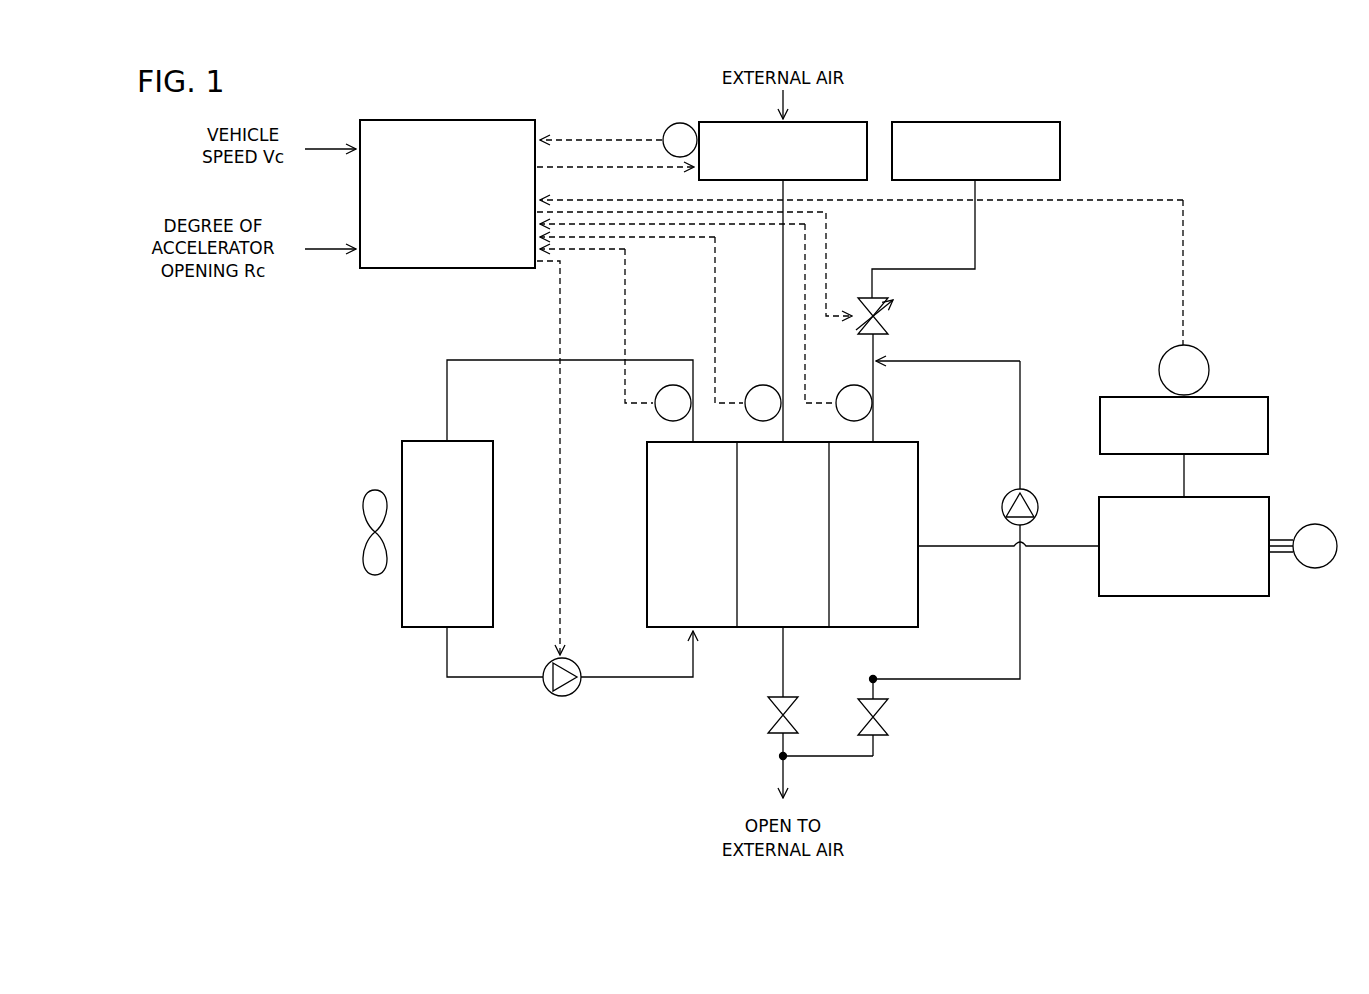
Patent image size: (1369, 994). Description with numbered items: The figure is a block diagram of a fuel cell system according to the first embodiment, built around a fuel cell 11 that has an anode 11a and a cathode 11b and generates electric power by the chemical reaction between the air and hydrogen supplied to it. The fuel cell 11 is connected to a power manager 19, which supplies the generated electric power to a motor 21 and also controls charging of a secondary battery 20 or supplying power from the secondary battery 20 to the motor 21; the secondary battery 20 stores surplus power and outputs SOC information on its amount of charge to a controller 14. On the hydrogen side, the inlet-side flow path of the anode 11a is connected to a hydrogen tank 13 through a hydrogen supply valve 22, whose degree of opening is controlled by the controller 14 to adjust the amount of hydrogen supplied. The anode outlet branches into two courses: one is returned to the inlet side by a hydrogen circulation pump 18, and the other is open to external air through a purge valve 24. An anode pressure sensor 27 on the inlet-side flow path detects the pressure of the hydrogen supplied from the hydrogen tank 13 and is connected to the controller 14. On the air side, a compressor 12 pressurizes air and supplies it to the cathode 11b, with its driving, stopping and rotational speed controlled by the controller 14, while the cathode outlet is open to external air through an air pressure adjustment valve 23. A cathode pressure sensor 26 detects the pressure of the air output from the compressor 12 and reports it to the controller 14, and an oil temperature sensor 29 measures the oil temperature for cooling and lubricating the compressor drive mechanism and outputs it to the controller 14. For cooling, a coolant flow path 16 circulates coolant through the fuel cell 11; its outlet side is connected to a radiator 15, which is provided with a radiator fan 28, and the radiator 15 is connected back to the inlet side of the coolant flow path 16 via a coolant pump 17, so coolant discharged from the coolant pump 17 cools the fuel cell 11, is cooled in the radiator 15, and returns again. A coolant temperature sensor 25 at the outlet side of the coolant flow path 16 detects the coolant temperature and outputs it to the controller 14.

The fuel cell 11 is at (801, 525).
The anode 11a is at (914, 516).
The cathode 11b is at (818, 449).
The compressor 12 is at (805, 122).
The hydrogen tank 13 is at (1000, 122).
The controller 14 is at (440, 120).
The radiator 15 is at (494, 497).
The coolant flow path 16 is at (645, 497).
The coolant pump 17 is at (577, 662).
The hydrogen circulation pump 18 is at (1038, 504).
The power manager 19 is at (1255, 497).
The secondary battery 20 is at (1260, 397).
The motor 21 is at (1318, 568).
The hydrogen supply valve 22 is at (890, 322).
The air pressure adjustment valve 23 is at (766, 719).
The purge valve 24 is at (888, 718).
The coolant temperature sensor 25 is at (670, 385).
The cathode pressure sensor 26 is at (760, 385).
The anode pressure sensor 27 is at (850, 385).
The radiator fan 28 is at (375, 489).
The oil temperature sensor 29 is at (668, 128).